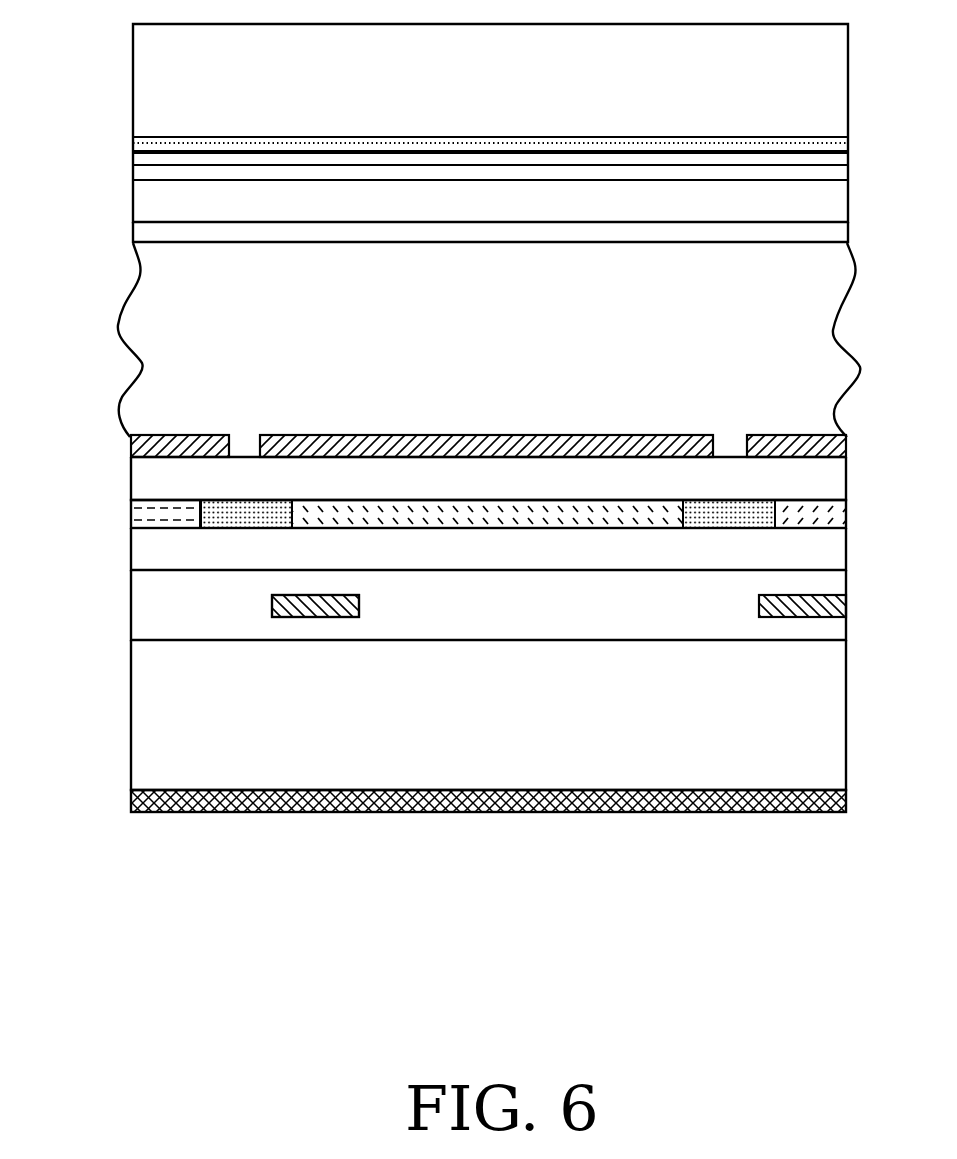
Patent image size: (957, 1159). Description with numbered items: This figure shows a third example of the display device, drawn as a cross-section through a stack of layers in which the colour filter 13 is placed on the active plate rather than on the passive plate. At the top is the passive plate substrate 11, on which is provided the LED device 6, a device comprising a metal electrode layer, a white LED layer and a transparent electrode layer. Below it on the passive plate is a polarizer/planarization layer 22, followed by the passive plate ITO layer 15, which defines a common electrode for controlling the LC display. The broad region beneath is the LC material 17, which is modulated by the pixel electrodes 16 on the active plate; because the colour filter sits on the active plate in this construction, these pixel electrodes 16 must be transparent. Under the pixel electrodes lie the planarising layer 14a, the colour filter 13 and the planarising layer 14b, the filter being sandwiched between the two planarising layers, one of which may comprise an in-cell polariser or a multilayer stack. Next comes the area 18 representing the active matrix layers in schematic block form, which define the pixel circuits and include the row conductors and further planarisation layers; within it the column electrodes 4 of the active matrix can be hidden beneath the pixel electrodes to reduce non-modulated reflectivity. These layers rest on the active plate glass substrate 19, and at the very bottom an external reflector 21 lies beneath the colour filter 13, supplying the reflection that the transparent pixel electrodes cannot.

The passive plate substrate 11 is at (152, 87).
The LED device 6 is at (129, 137).
The polarizer/planarization layer 22 is at (152, 199).
The passive plate ITO layer 15 is at (152, 231).
The LC material 17 is at (492, 349).
The pixel electrodes 16 is at (150, 446).
The planarising layer 14a is at (146, 476).
The colour filter layer 13 is at (150, 512).
The planarising layer 14b is at (146, 547).
The active matrix layers 18 is at (150, 601).
The column electrodes 4 is at (328, 618).
The active plate glass substrate 19 is at (150, 724).
The external reflector 21 is at (132, 800).